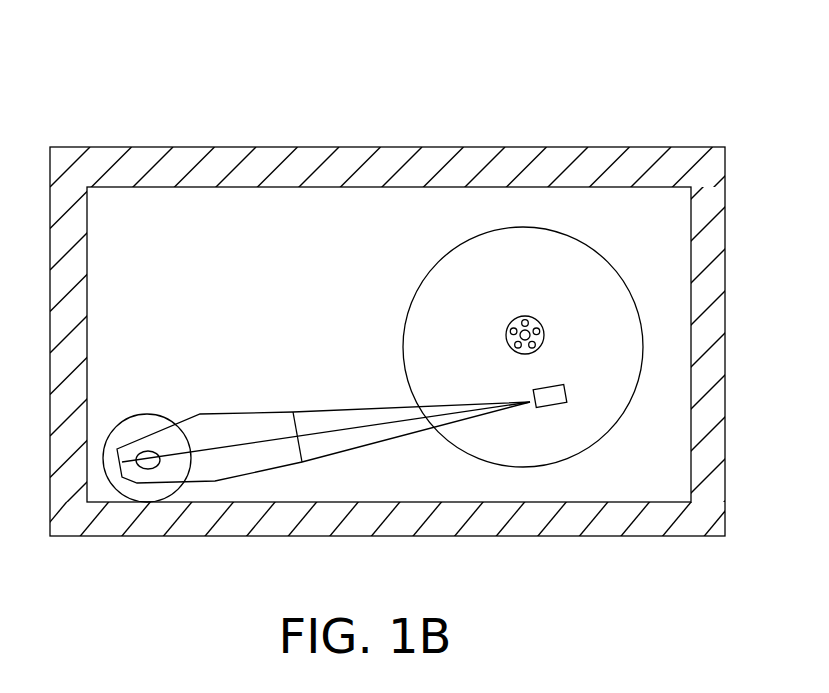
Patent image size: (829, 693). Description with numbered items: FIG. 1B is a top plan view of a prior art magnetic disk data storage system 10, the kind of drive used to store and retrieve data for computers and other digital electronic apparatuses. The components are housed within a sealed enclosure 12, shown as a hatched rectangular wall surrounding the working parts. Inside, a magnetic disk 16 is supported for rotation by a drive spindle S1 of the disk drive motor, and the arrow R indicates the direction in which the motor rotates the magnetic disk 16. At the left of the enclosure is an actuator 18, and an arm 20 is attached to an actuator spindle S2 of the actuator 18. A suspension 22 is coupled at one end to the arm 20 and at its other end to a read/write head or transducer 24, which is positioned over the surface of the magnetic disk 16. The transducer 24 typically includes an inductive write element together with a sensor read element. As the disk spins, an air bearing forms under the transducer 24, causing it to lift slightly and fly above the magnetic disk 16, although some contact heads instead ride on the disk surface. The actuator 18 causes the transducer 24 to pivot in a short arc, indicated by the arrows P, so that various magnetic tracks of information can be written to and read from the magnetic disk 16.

The magnetic disk data storage system 10 is at (604, 96).
The sealed enclosure 12 is at (315, 525).
The magnetic disk 16 is at (481, 284).
The actuator 18 is at (147, 422).
The arm 20 is at (247, 430).
The suspension 22 is at (377, 433).
The read/write head or transducer 24 is at (562, 387).
The drive spindle S1 is at (535, 318).
The actuator spindle S2 is at (160, 461).
The arrow indicating disk rotation R is at (600, 246).
The arrows indicating transducer pivoting P is at (538, 370).